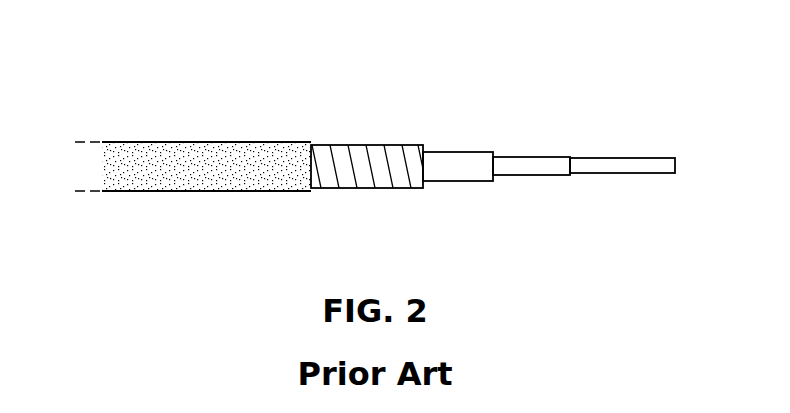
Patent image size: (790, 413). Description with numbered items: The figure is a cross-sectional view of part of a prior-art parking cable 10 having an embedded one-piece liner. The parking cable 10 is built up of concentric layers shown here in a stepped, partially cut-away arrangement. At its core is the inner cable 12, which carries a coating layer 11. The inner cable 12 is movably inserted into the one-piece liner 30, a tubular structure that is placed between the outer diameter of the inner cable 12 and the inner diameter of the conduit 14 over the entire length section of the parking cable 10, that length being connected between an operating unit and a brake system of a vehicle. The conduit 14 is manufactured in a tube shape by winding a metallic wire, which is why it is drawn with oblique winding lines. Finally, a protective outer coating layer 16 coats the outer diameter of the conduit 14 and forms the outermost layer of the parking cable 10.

The parking cable 10 is at (341, 110).
The protective outer coating layer 16 is at (195, 182).
The conduit 14 is at (362, 175).
The one-piece liner 30 is at (460, 173).
The coating layer 11 is at (533, 170).
The inner cable 12 is at (623, 167).